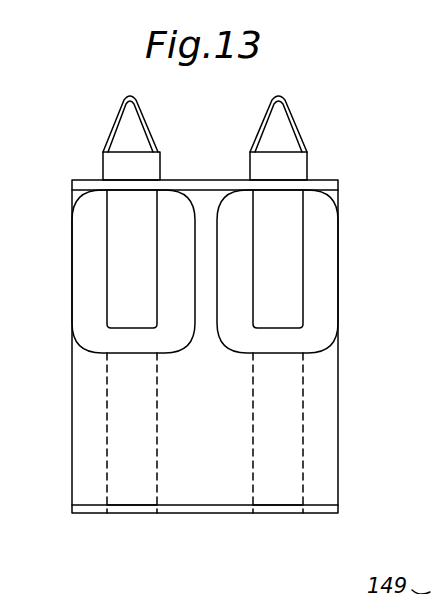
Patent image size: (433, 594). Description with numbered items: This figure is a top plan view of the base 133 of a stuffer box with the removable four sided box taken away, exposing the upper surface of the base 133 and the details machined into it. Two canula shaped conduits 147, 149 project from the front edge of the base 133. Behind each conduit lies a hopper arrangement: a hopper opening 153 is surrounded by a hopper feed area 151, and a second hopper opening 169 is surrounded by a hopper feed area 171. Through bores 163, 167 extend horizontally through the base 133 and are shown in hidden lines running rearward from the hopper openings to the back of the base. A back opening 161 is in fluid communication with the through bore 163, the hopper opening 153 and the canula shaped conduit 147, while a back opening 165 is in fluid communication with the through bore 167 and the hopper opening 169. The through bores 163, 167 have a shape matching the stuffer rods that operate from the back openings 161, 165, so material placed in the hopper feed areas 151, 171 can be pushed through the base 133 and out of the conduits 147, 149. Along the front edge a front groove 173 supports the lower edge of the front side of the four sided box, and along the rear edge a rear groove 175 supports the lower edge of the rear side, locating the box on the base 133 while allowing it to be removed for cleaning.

The base 133 is at (77, 175).
The canula shaped conduit 147 is at (308, 168).
The canula shaped conduit 149 is at (162, 170).
The hopper feed area 151 is at (320, 282).
The hopper opening 153 is at (290, 223).
The back opening 161 is at (287, 521).
The through bore 163 is at (303, 440).
The back opening 165 is at (130, 522).
The through bore 167 is at (107, 434).
The hopper opening 169 is at (118, 220).
The hopper feed area 171 is at (83, 288).
The front groove 173 is at (198, 188).
The rear groove 175 is at (207, 513).